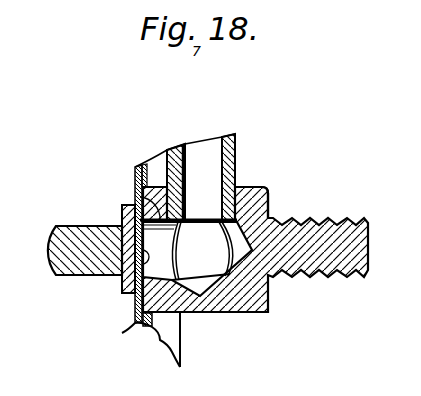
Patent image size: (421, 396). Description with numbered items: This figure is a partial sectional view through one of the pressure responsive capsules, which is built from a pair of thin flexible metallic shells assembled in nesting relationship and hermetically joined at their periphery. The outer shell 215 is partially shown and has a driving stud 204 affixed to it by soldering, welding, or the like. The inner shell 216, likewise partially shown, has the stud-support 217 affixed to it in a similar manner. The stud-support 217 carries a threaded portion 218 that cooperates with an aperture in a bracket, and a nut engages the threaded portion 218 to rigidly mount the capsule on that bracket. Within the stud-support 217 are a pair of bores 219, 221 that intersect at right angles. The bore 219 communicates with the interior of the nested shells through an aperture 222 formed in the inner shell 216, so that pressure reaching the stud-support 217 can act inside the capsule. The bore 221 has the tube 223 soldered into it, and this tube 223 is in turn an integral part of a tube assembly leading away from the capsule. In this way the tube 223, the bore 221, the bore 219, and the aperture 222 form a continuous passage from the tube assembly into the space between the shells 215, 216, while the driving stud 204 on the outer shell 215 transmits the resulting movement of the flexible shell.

The driving stud 204 is at (72, 268).
The outer shell 215 is at (137, 320).
The inner shell 216 is at (181, 340).
The stud-support 217 is at (270, 205).
The threaded portion 218 is at (345, 272).
The bore 219 is at (135, 197).
The bore 221 is at (242, 192).
The aperture 222 is at (123, 278).
The tube 223 is at (235, 134).